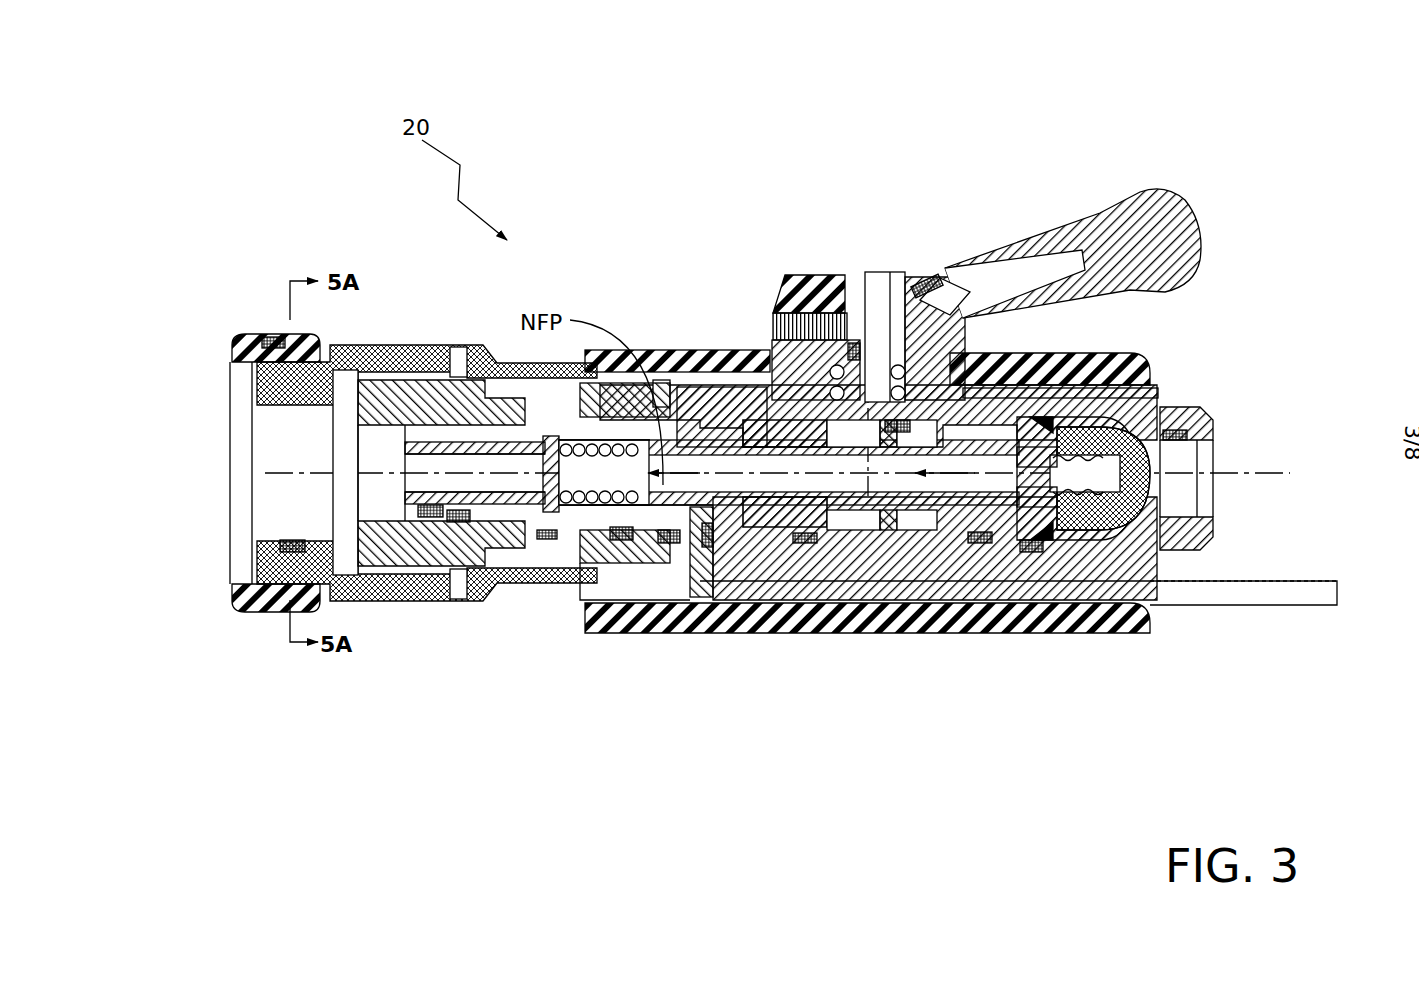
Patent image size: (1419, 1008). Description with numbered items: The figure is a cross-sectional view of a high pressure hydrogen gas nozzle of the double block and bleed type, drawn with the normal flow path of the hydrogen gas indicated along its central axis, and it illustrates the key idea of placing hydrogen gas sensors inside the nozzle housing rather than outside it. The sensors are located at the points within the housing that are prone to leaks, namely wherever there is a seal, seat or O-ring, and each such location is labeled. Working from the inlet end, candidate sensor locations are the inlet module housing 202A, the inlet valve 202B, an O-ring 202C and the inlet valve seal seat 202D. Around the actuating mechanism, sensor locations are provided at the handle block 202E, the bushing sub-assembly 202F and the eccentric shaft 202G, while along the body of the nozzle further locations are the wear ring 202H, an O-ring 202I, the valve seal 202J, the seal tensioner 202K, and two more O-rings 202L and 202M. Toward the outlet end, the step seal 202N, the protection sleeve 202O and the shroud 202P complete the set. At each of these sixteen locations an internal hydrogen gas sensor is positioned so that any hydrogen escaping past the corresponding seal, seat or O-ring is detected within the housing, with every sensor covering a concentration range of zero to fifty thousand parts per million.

The inlet module housing 202A is at (1212, 428).
The inlet valve 202B is at (1190, 518).
The O-ring 202C is at (1031, 552).
The inlet valve seal seat 202D is at (980, 543).
The handle block 202E is at (940, 123).
The bushing sub-assembly 202F is at (627, 271).
The eccentric shaft 202G is at (785, 85).
The wear ring 202H is at (806, 545).
The O-ring 202I is at (707, 548).
The valve seal 202J is at (668, 540).
The seal tensioner 202K is at (621, 538).
The O-ring 202L is at (546, 537).
The O-ring 202M is at (433, 515).
The step seal 202N is at (457, 521).
The protection sleeve 202O is at (176, 146).
The shroud 202P is at (127, 411).